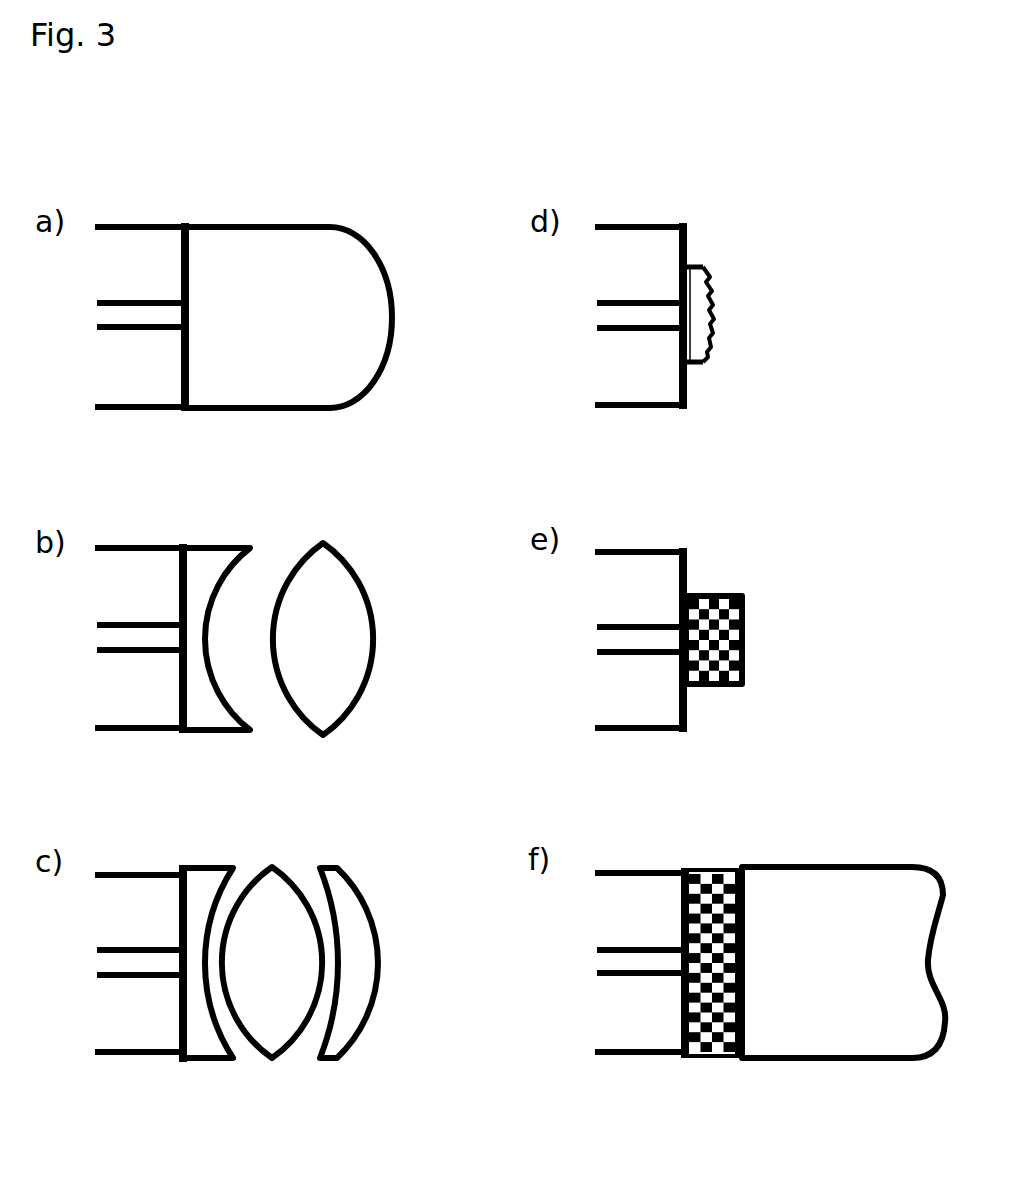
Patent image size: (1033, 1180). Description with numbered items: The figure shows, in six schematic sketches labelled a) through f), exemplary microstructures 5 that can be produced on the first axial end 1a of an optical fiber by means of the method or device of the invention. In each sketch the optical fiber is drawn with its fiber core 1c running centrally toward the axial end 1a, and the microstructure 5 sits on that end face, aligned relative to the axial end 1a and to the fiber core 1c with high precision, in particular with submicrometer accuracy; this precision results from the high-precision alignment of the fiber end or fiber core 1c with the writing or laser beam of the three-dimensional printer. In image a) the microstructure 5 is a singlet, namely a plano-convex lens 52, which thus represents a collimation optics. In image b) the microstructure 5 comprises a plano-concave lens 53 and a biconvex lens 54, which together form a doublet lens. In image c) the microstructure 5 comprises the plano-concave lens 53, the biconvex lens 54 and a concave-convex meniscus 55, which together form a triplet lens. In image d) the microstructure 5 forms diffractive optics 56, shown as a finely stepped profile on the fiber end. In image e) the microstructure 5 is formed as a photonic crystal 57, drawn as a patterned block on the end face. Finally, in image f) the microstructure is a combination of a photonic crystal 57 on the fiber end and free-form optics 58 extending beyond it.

The first axial end of the optical fiber 1a is at (138, 205).
The fiber core 1c is at (135, 317).
The microstructure 5 is at (252, 202).
The plano-convex lens 52 is at (310, 215).
The plano-concave lens 53 is at (225, 573).
The biconvex lens 54 is at (340, 550).
The concave-convex meniscus 55 is at (357, 1043).
The diffractive optics 56 is at (713, 315).
The photonic crystal 57 is at (747, 615).
The free-form optics 58 is at (863, 1063).